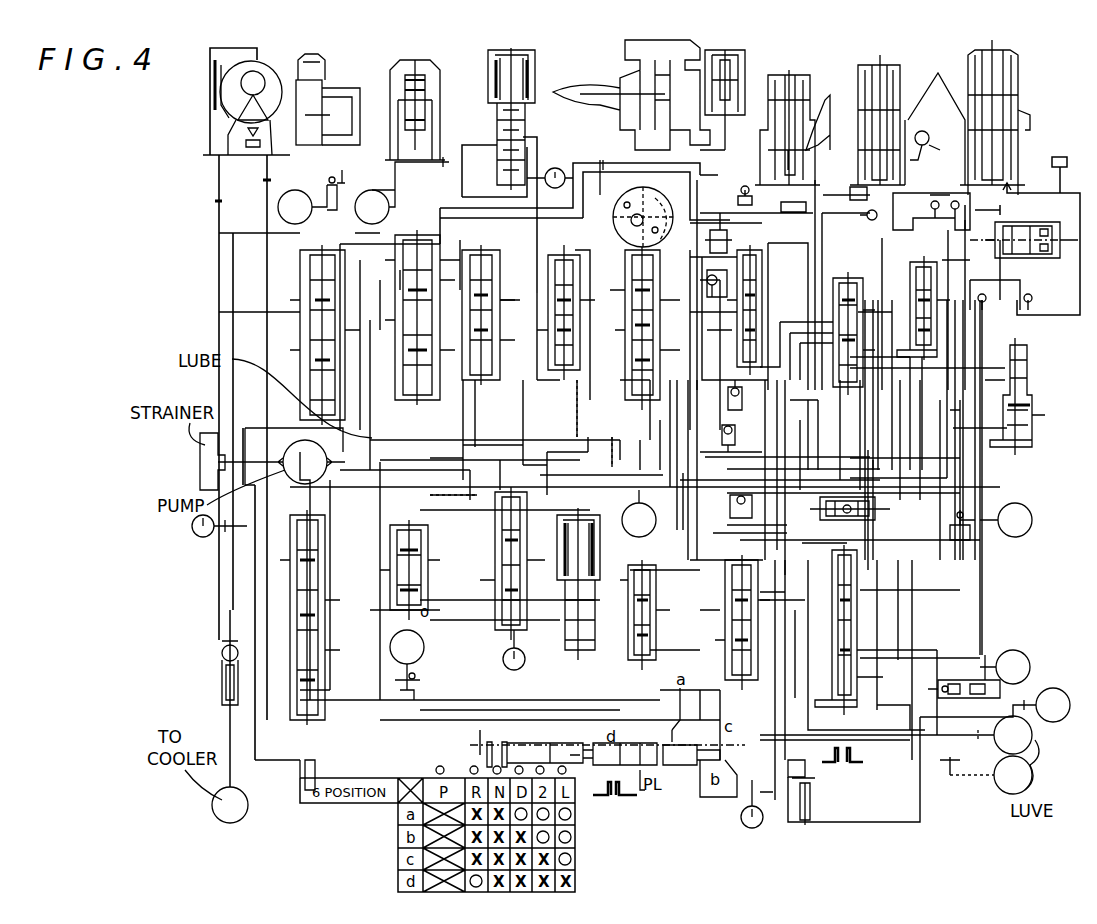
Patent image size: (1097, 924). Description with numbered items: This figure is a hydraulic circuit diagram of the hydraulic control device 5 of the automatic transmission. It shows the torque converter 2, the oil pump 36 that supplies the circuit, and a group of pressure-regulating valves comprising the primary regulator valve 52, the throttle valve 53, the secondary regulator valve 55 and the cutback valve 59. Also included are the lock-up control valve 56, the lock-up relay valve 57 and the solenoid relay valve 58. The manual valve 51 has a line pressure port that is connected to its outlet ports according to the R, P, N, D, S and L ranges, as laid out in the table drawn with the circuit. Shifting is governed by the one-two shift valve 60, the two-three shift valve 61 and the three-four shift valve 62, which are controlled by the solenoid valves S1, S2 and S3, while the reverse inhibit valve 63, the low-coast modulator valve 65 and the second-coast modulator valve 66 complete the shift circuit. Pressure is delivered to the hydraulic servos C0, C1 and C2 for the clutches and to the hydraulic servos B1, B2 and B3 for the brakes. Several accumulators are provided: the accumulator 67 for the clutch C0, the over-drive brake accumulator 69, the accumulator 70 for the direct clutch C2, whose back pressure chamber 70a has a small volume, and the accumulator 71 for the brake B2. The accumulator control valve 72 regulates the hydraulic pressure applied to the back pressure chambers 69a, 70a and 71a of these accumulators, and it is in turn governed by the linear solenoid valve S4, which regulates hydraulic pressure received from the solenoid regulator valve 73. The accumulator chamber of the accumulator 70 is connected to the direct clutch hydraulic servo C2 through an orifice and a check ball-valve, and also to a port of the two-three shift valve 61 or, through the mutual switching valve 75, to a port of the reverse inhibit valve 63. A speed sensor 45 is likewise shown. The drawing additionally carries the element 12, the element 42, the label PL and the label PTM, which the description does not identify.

The torque converter 2 is at (262, 58).
The hydraulic control device 5 is at (138, 149).
The lock-up clutch 12 is at (212, 70).
The oil pump 36 is at (283, 458).
The lock-up control valve 42 is at (296, 82).
The speed sensor 45 is at (326, 64).
The manual valve 51 is at (480, 752).
The primary regulator valve 52 is at (288, 575).
The throttle valve 53 is at (628, 255).
The secondary regulator valve 55 is at (488, 252).
The lock-up control valve 56 is at (428, 262).
The lock-up relay valve 57 is at (297, 270).
The solenoid relay valve 58 is at (556, 262).
The cutback valve 59 is at (395, 524).
The 1-2 shift valve 60 is at (862, 562).
The 2-3 shift valve 61 is at (844, 276).
The 3-4 shift valve 62 is at (770, 246).
The reverse inhibit valve 63 is at (742, 568).
The low-coast modulator valve 65 is at (1030, 372).
The second-coast modulator valve 66 is at (910, 276).
The accumulator for the clutch C0 67 is at (435, 72).
The over-drive brake accumulator 69 is at (790, 72).
The back pressure chamber 69a is at (830, 95).
The accumulator for the direct clutch C2 70 is at (890, 62).
The back pressure chamber 70a is at (924, 145).
The accumulator for the brake B2 71 is at (1020, 68).
The back pressure chamber 71a is at (1025, 118).
The accumulator control valve 72 is at (495, 491).
The solenoid regulator valve 73 is at (633, 580).
The mutual switching valve 75 is at (812, 516).
The solenoid valve S1 is at (735, 48).
The solenoid valve S2 is at (1035, 258).
The solenoid valve S3 is at (538, 72).
The linear solenoid valve S4 is at (556, 533).
The hydraulic servo for brake B1 is at (605, 133).
The hydraulic servo for brake B2 is at (991, 521).
The hydraulic servo for brake B3 is at (979, 674).
The hydraulic servo for clutch C0 is at (311, 197).
The hydraulic servo for clutch C1 is at (407, 665).
The direct clutch hydraulic servo C2 is at (639, 513).
The line pressure PL is at (1047, 705).
The throttle modulator pressure PTM is at (210, 537).